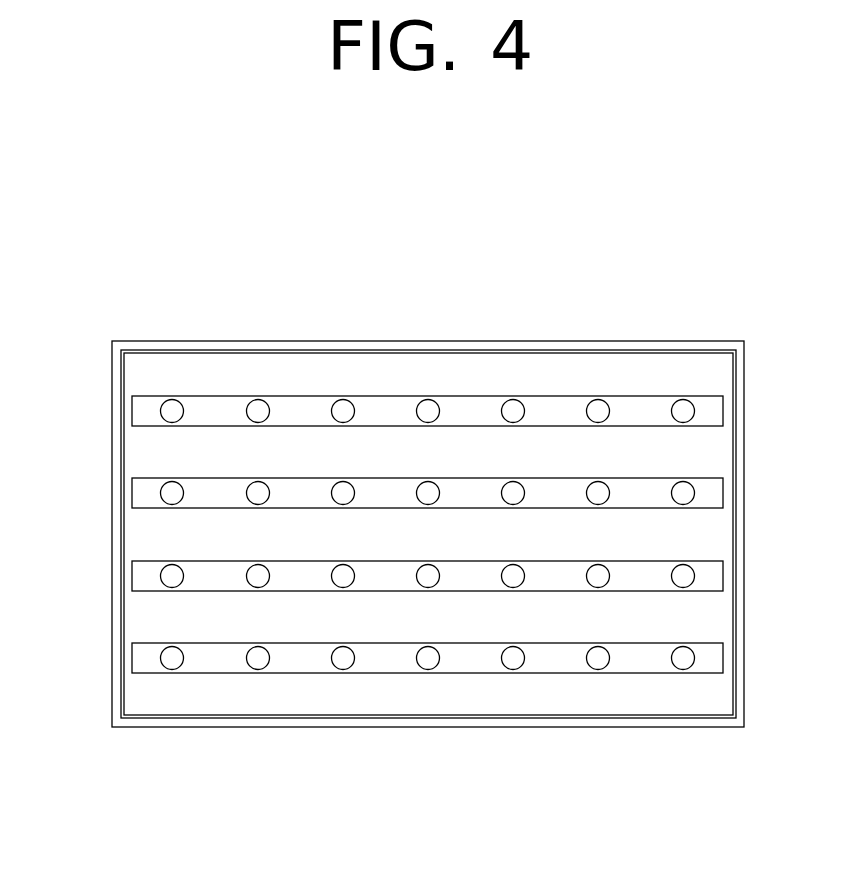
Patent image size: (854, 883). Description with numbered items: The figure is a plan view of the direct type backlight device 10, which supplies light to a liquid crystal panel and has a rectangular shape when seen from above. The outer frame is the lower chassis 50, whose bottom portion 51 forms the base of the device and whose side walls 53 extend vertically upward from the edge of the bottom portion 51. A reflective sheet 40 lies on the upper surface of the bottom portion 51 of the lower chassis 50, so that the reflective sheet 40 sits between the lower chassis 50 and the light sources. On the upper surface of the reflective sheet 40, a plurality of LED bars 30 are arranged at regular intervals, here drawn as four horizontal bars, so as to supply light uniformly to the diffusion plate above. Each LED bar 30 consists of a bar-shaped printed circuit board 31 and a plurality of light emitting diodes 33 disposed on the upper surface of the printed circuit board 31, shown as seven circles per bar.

The direct type backlight device 10 is at (394, 498).
The lower chassis 50 is at (394, 489).
The bottom portion 51 is at (122, 686).
The side walls 53 is at (321, 350).
The reflective sheet 40 is at (259, 365).
The LED bars 30 is at (427, 585).
The printed circuit board 31 is at (302, 662).
The light emitting diodes 33 is at (256, 663).